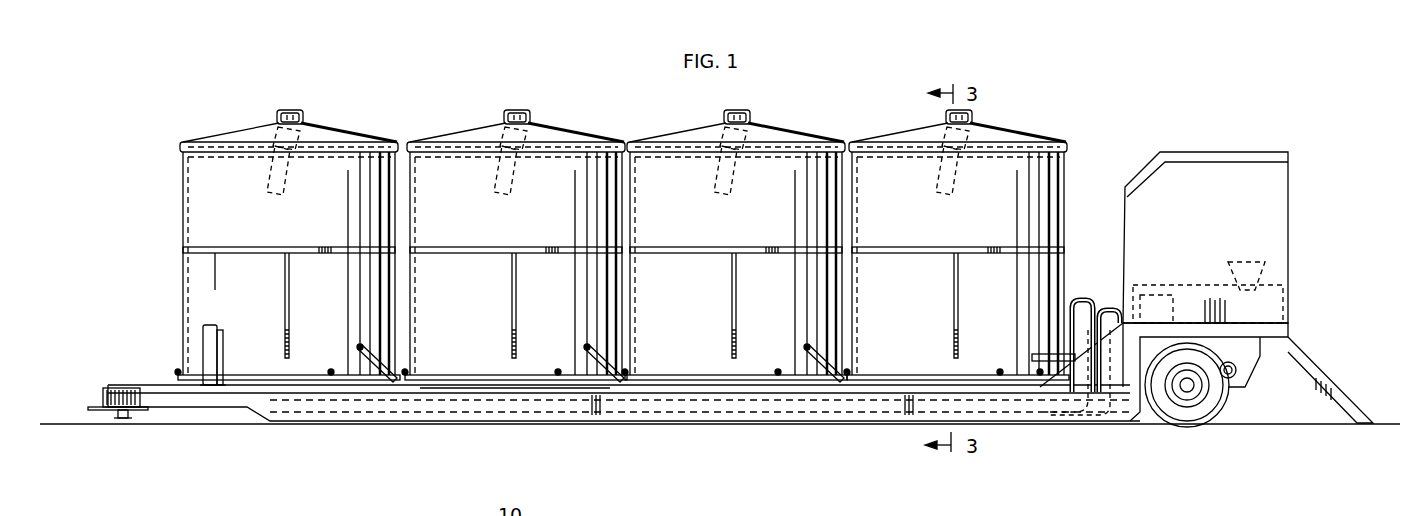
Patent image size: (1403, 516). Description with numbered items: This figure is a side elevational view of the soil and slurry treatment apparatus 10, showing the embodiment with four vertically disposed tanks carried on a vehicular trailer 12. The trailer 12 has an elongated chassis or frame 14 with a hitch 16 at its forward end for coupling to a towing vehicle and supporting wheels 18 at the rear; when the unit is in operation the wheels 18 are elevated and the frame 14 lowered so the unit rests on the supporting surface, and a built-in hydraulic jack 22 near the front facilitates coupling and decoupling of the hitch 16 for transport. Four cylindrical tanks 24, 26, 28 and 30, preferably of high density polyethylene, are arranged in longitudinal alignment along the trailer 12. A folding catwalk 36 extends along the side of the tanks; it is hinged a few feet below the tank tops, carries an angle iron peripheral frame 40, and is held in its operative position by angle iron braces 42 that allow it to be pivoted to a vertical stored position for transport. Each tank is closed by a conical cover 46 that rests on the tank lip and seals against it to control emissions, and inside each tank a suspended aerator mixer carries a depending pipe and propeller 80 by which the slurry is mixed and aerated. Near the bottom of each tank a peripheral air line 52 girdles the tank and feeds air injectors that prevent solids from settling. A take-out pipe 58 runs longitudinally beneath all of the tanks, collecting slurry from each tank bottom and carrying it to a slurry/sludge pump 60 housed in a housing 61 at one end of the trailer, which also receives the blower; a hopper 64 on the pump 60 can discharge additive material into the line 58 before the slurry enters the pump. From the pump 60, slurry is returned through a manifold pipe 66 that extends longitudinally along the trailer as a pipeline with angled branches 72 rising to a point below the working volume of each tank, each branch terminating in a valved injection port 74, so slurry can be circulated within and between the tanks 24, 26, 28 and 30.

The soil and slurry treatment apparatus 10 is at (166, 166).
The vehicular trailer 12 is at (352, 428).
The chassis or frame 14 is at (1113, 410).
The hitch 16 is at (118, 418).
The supporting wheels 18 is at (1210, 408).
The hydraulic jack 22 is at (208, 342).
The cylindrical tank 24 is at (197, 220).
The cylindrical tank 26 is at (553, 223).
The cylindrical tank 28 is at (775, 223).
The cylindrical tank 30 is at (990, 223).
The folding catwalk 36 is at (280, 246).
The angle iron peripheral frame 40 is at (222, 250).
The angle iron braces 42 is at (292, 298).
The cover 46 is at (333, 133).
The peripheral air line 52 is at (462, 373).
The pipe 58 is at (1075, 298).
The slurry/sludge pump 60 is at (1200, 285).
The housing 61 is at (1188, 175).
The hopper 64 is at (1257, 262).
The manifold pipe 66 is at (1100, 300).
The 45° branches 72 is at (614, 360).
The injection port 74 is at (808, 352).
The depending pipe and propeller 80 is at (715, 187).